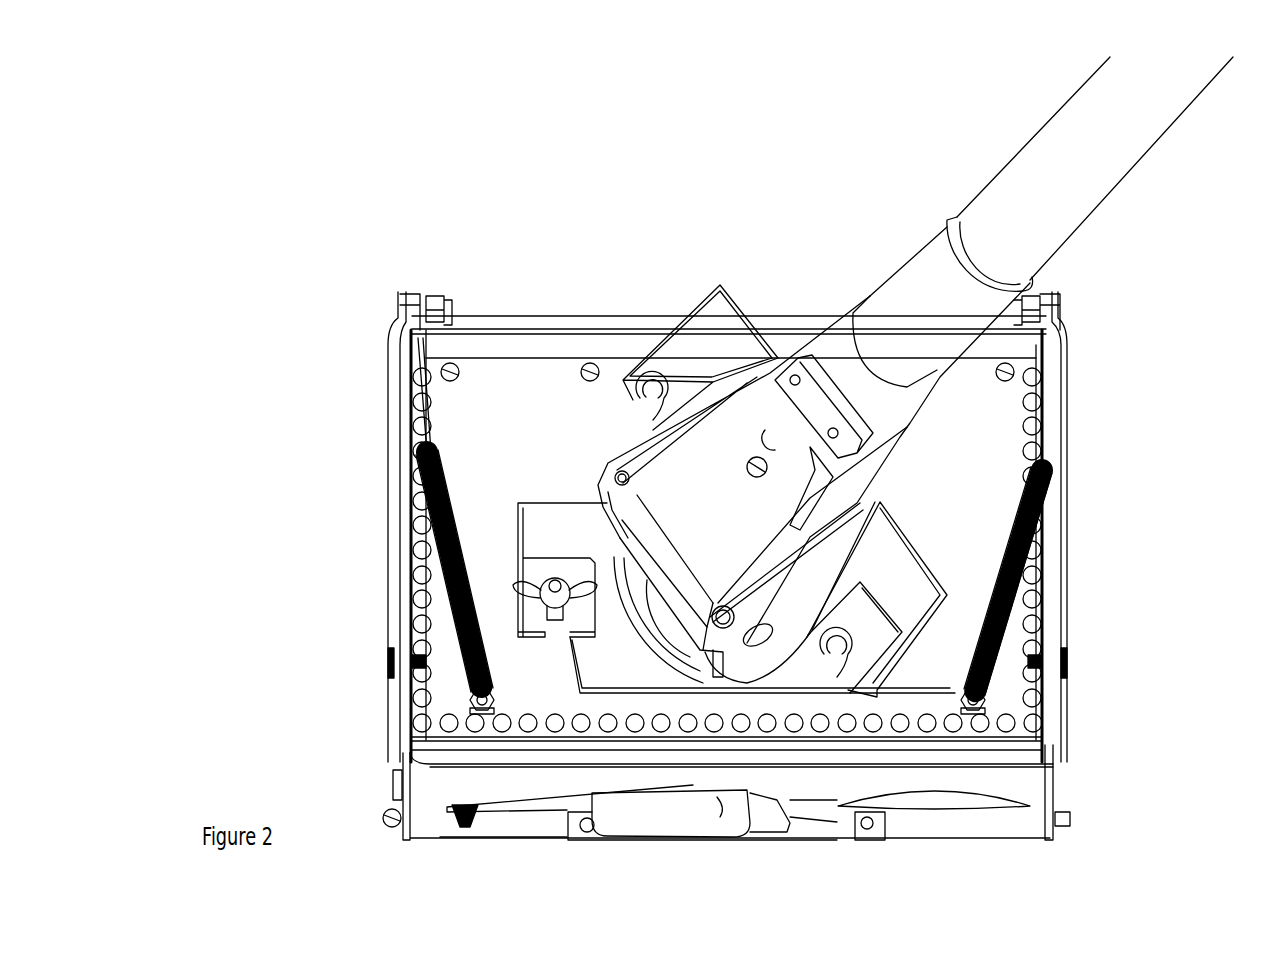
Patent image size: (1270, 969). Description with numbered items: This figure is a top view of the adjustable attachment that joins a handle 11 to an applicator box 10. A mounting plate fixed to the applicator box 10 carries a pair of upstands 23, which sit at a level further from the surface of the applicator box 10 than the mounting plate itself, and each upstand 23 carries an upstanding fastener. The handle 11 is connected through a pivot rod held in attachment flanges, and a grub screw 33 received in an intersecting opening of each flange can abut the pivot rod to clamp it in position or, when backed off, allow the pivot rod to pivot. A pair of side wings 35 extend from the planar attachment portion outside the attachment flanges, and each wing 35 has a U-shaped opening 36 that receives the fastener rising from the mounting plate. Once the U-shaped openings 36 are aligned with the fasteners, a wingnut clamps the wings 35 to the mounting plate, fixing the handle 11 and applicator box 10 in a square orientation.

The applicator box 10 is at (514, 306).
The handle 11 is at (1030, 125).
The upstands 23 is at (668, 340).
The grub screw 33 is at (602, 476).
The side wings 35 is at (740, 323).
The U-shaped opening 36 is at (640, 390).